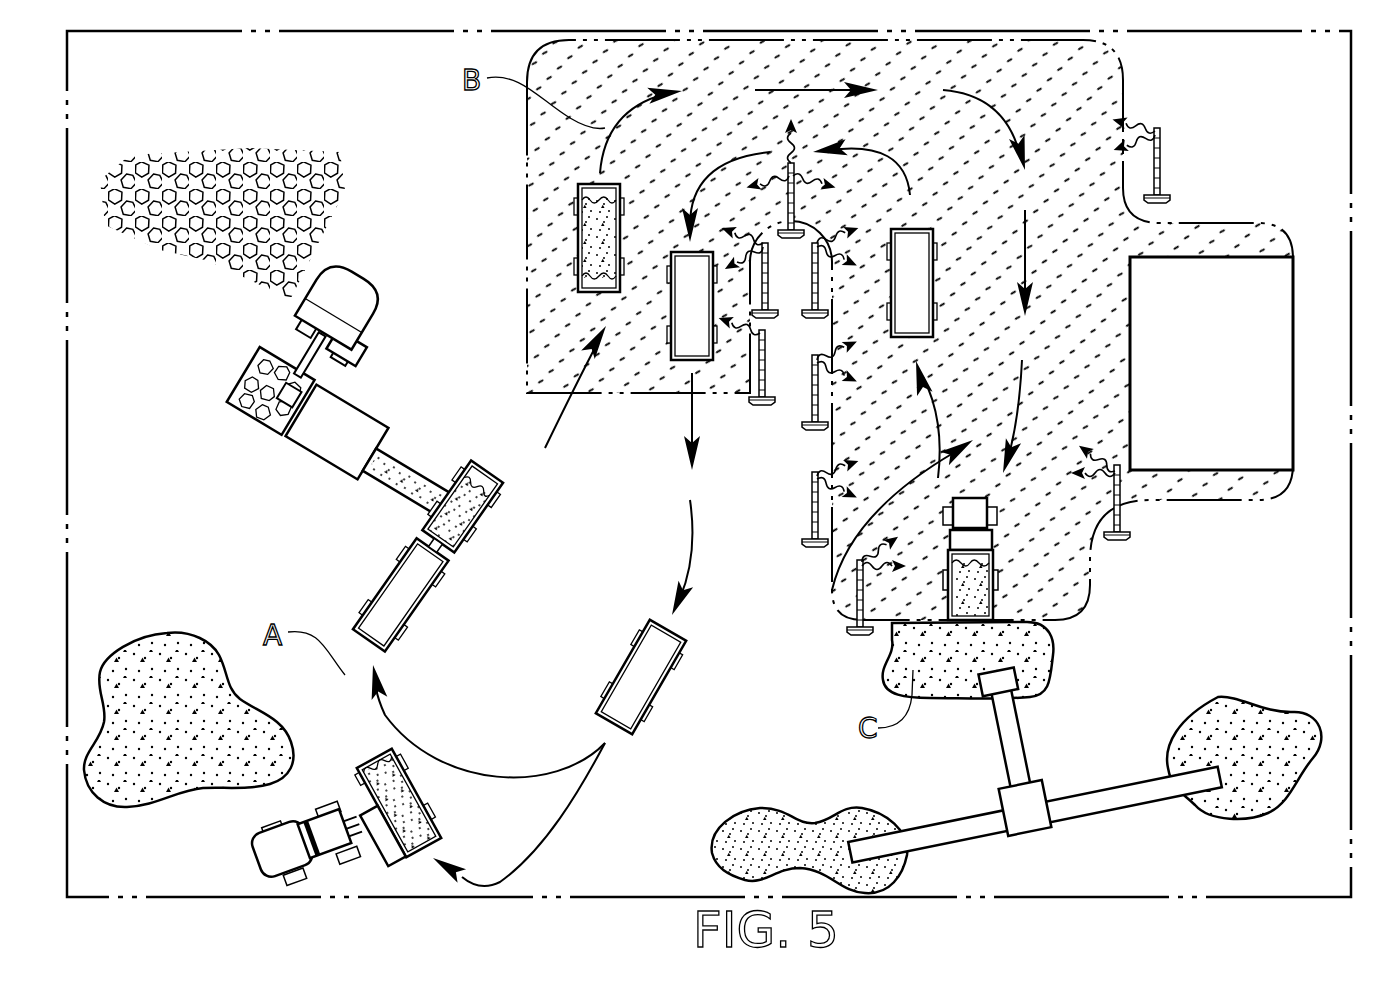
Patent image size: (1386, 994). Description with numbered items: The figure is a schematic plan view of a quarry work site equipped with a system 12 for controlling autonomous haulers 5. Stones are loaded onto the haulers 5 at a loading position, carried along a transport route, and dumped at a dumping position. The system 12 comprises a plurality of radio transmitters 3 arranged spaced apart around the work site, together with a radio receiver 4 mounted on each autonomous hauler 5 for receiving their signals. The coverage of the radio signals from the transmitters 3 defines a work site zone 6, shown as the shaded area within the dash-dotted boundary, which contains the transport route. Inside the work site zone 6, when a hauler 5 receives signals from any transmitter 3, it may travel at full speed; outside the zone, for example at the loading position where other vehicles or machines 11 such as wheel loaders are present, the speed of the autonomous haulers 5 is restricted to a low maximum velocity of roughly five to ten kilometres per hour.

The radio transmitter 3 is at (1160, 163).
The radio receiver 4 is at (380, 572).
The autonomous hauler 5 is at (380, 615).
The work site zone 6 is at (550, 173).
The other vehicle or machine 11 is at (363, 290).
The system 12 is at (853, 604).